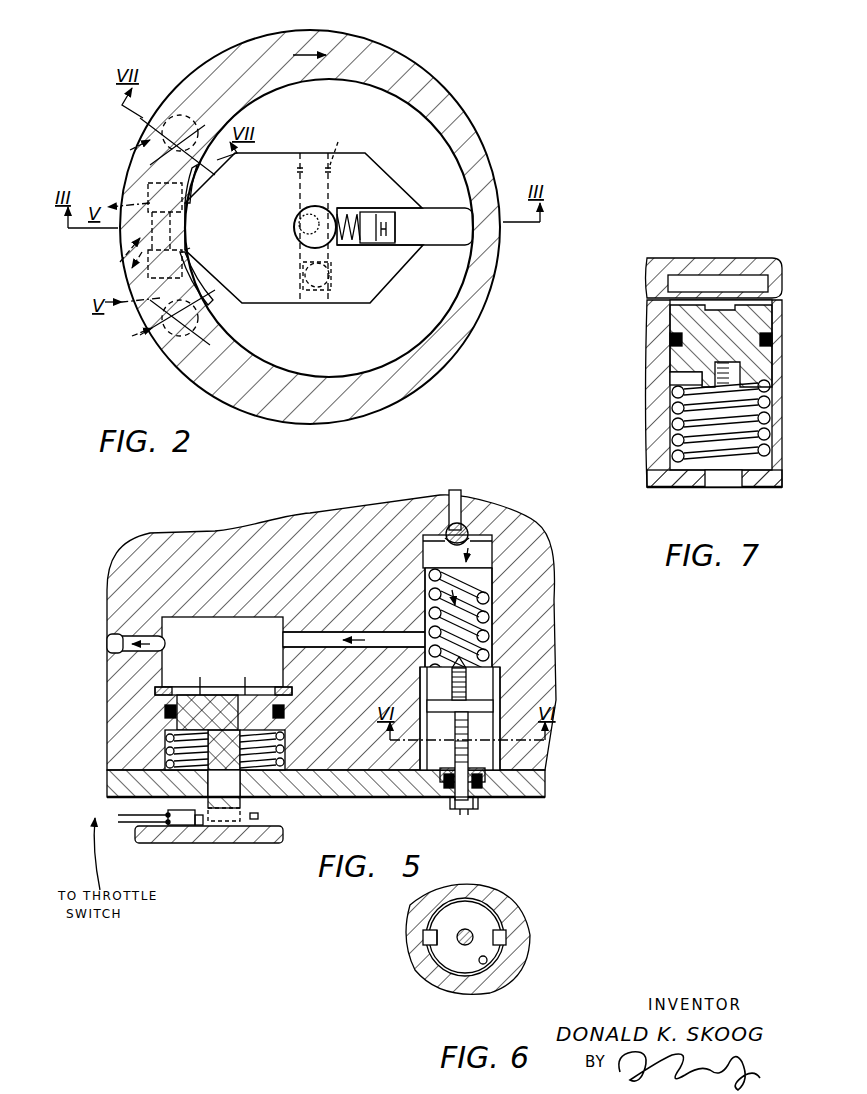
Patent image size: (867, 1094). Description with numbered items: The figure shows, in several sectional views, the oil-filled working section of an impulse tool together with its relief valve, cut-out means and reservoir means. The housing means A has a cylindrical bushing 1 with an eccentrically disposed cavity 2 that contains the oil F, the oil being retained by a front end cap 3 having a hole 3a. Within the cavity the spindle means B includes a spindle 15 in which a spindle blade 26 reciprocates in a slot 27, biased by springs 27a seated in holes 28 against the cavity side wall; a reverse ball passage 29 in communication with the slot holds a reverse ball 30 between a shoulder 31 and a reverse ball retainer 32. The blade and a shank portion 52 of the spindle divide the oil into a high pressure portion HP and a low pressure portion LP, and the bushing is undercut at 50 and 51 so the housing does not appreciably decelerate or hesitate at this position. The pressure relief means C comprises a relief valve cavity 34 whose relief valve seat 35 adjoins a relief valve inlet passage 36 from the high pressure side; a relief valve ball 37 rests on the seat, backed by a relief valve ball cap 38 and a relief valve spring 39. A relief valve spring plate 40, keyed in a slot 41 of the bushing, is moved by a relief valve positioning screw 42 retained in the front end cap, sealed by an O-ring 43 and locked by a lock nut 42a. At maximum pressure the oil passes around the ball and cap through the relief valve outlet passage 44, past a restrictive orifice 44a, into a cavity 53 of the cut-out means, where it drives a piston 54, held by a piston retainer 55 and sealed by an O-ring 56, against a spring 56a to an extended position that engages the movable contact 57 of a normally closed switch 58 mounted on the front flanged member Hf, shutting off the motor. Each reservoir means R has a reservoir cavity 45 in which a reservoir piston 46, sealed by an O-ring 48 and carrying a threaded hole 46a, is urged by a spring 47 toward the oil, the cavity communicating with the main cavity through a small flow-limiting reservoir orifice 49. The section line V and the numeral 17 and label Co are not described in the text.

In FIG. 2, the cylindrical bushing 1 is at (443, 100).
In FIG. 7, the cylindrical bushing 1 is at (655, 455).
In FIG. 5, the cylindrical bushing 1 is at (355, 523).
In FIG. 6, the cylindrical bushing 1 is at (480, 893).
In FIG. 2, the eccentrically disposed cavity 2 is at (443, 146).
In FIG. 7, the front end cap 3 is at (656, 485).
In FIG. 5, the front end cap 3 is at (410, 788).
In FIG. 7, the hole 3a is at (728, 480).
In FIG. 2, the spindle 15 is at (300, 303).
In FIG. 2, the ball 17 is at (296, 216).
In FIG. 2, the spindle blade 26 is at (432, 212).
In FIG. 2, the slot 27 is at (340, 212).
In FIG. 2, the springs 27a is at (363, 215).
In FIG. 2, the holes 28 is at (292, 238).
In FIG. 2, the reverse ball passage 29 is at (299, 196).
In FIG. 2, the reverse ball 30 is at (331, 270).
In FIG. 2, the shoulder 31 is at (332, 284).
In FIG. 2, the reverse ball retainer 32 is at (347, 143).
In FIG. 5, the relief valve cavity 34 is at (494, 630).
In FIG. 6, the relief valve cavity 34 is at (487, 963).
In FIG. 5, the relief valve seat 35 is at (467, 530).
In FIG. 2, the relief valve inlet passage 36 is at (150, 183).
In FIG. 5, the relief valve inlet passage 36 is at (456, 490).
In FIG. 5, the relief valve ball 37 is at (474, 540).
In FIG. 5, the relief valve ball cap 38 is at (486, 558).
In FIG. 5, the relief valve spring 39 is at (487, 617).
In FIG. 5, the relief valve spring plate 40 is at (420, 697).
In FIG. 6, the relief valve spring plate 40 is at (445, 928).
In FIG. 5, the slot 41 is at (503, 766).
In FIG. 6, the slot 41 is at (505, 932).
In FIG. 5, the relief valve positioning screw 42 is at (447, 745).
In FIG. 6, the relief valve positioning screw 42 is at (458, 945).
In FIG. 5, the lock nut 42a is at (479, 810).
In FIG. 5, the O-ring 43 is at (493, 778).
In FIG. 2, the relief valve outlet passage 44 is at (155, 282).
In FIG. 5, the relief valve outlet passage 44 is at (128, 636).
In FIG. 5, the restrictive orifice 44a is at (110, 652).
In FIG. 7, the reservoir cavity 45 is at (697, 285).
In FIG. 7, the reservoir piston 46 is at (672, 374).
In FIG. 7, the threaded hole 46a is at (672, 384).
In FIG. 7, the spring 47 is at (672, 427).
In FIG. 7, the O-ring 48 is at (670, 339).
In FIG. 2, the reservoir orifice 49 is at (184, 228).
In FIG. 7, the reservoir orifice 49 is at (772, 262).
In FIG. 2, the undercut 50 is at (195, 190).
In FIG. 2, the undercut 51 is at (213, 305).
In FIG. 2, the shank portion 52 is at (186, 250).
In FIG. 5, the cavity 53 is at (243, 623).
In FIG. 5, the piston 54 is at (270, 722).
In FIG. 5, the piston retainer 55 is at (148, 715).
In FIG. 5, the O-ring 56 is at (286, 712).
In FIG. 5, the spring 56a is at (165, 740).
In FIG. 5, the movable contact 57 is at (260, 816).
In FIG. 5, the normally closed switch 58 is at (184, 826).
In FIG. 2, the housing means A is at (413, 62).
In FIG. 2, the spindle means B is at (388, 178).
In FIG. 2, the pressure relief means C is at (115, 250).
In FIG. 5, the pressure relief means C is at (507, 693).
In FIG. 2, the control chamber Co is at (125, 272).
In FIG. 5, the control chamber Co is at (195, 615).
In FIG. 2, the oil F is at (355, 101).
In FIG. 7, the oil F is at (667, 310).
In FIG. 5, the oil F is at (478, 590).
In FIG. 2, the reservoir means R is at (135, 245).
In FIG. 7, the reservoir means R is at (670, 398).
In FIG. 2, the vane direction V is at (153, 229).
In FIG. 2, the high pressure portion HP is at (310, 103).
In FIG. 2, the low pressure portion LP is at (365, 355).
In FIG. 5, the front flanged member Hf is at (143, 843).